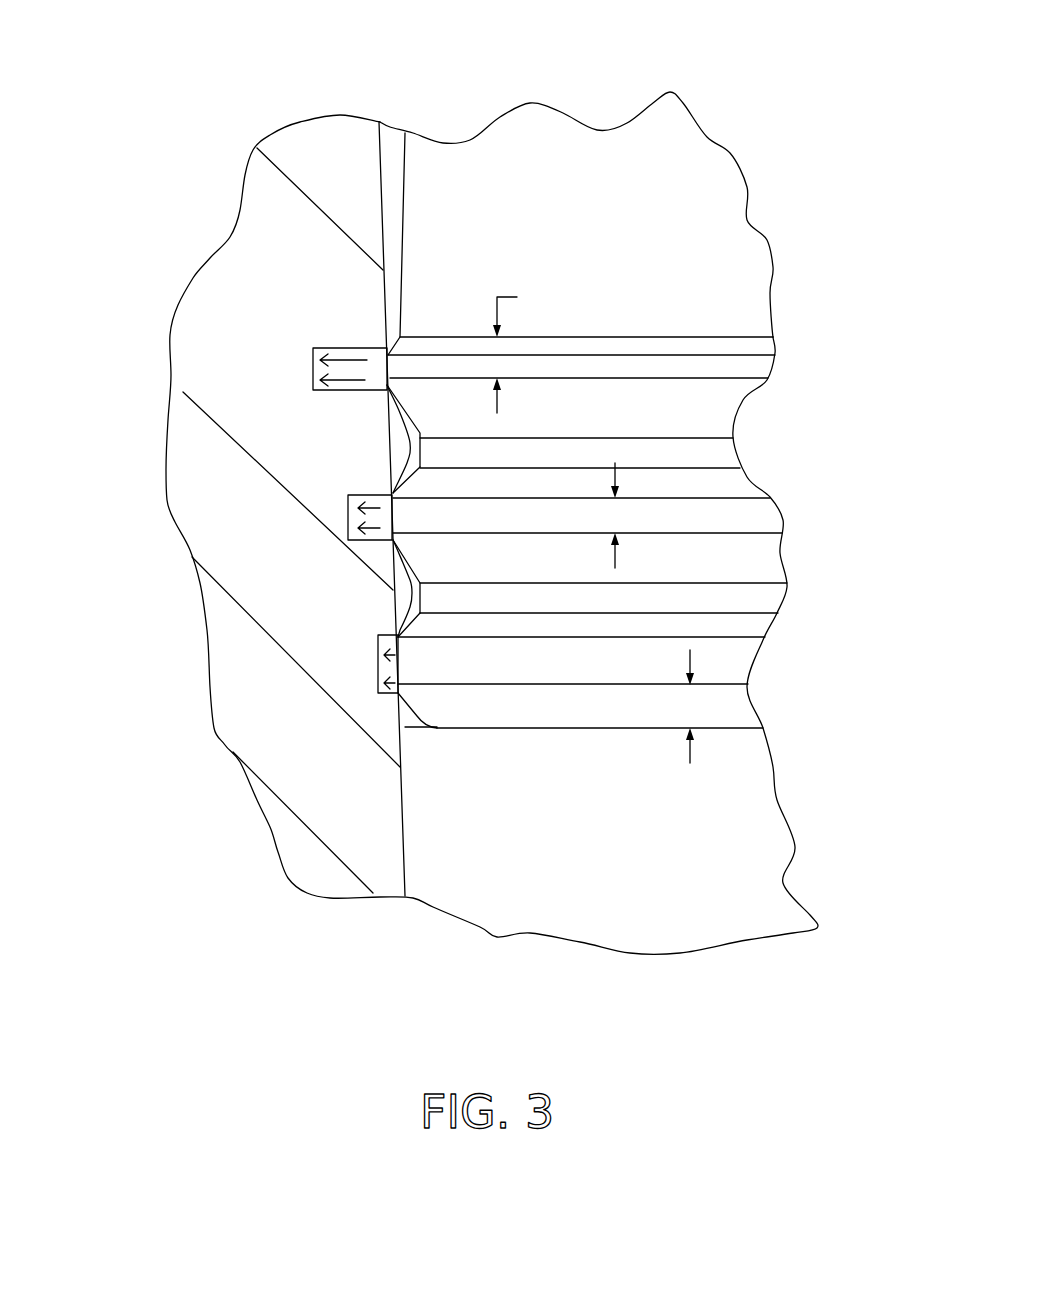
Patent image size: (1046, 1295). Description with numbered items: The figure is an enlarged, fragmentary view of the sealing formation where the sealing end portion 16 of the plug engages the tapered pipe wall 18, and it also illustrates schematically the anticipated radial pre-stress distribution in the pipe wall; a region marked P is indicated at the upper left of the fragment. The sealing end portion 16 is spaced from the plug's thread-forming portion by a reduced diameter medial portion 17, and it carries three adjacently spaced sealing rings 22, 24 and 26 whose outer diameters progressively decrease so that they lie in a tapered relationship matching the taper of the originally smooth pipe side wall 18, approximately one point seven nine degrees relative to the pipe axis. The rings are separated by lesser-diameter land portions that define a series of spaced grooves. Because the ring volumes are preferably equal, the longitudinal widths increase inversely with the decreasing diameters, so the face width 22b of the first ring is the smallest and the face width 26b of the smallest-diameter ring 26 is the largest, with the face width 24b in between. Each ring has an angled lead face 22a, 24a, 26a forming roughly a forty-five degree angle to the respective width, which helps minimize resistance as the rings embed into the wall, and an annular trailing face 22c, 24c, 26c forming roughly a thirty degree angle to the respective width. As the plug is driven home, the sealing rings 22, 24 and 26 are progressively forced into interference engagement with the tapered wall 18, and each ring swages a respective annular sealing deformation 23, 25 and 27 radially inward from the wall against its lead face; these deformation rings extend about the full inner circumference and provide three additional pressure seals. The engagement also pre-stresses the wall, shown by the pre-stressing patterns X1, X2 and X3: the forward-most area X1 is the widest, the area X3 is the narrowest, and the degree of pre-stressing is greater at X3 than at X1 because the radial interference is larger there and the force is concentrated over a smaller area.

The peripheral region P is at (318, 168).
The sealing end portion 16 is at (815, 217).
The reduced diameter medial portion 17 is at (623, 242).
The tapered pipe wall 18 is at (375, 213).
The sealing ring 22 is at (381, 363).
The angled lead face 22a is at (430, 425).
The face width 22b is at (537, 347).
The annular trailing face 22c is at (398, 334).
The annular sealing deformation 23 is at (385, 437).
The sealing ring 24 is at (379, 561).
The angled lead face 24a is at (423, 558).
The face width 24b is at (616, 515).
The annular trailing face 24c is at (388, 479).
The annular sealing deformation 25 is at (391, 590).
The sealing ring 26 is at (413, 669).
The angled lead face 26a is at (423, 706).
The face width 26b is at (693, 706).
The annular trailing face 26c is at (389, 616).
The annular sealing deformation 27 is at (405, 723).
The pre-stressing pattern X1 is at (375, 654).
The pre-stressing pattern X2 is at (345, 513).
The pre-stressing pattern X3 is at (311, 364).